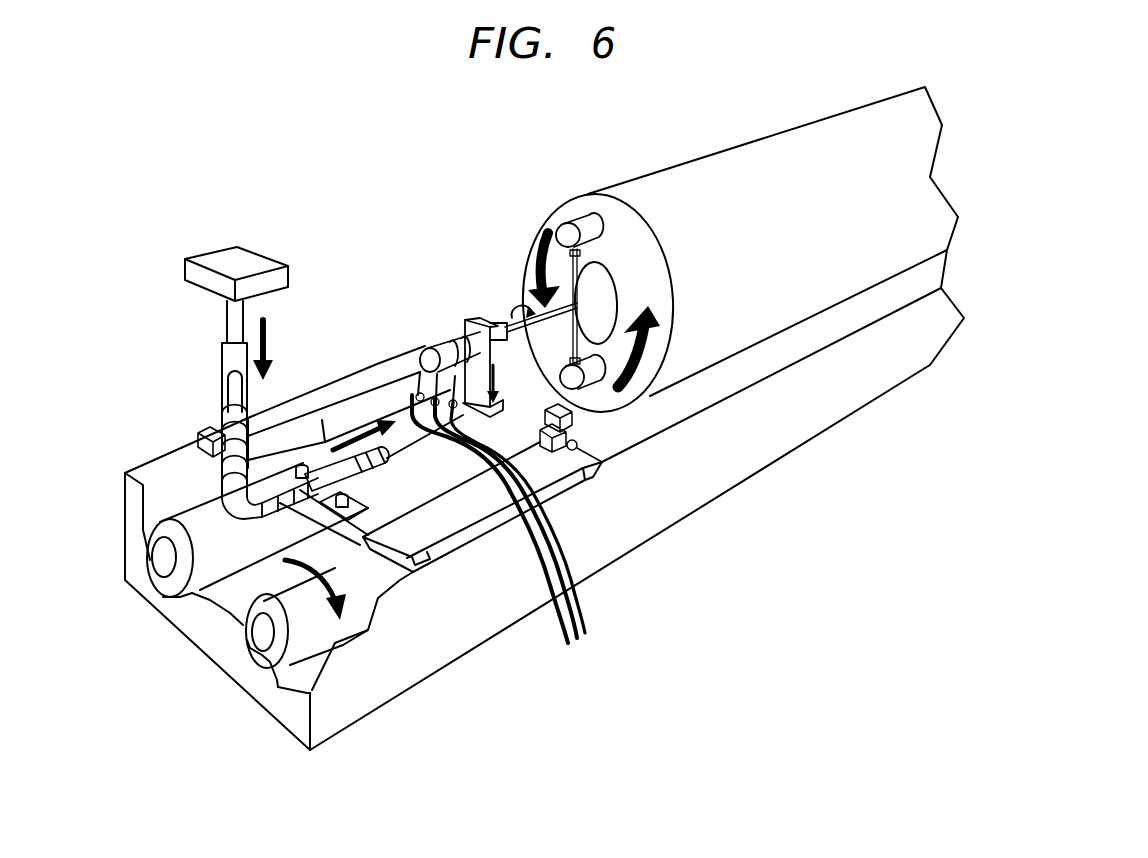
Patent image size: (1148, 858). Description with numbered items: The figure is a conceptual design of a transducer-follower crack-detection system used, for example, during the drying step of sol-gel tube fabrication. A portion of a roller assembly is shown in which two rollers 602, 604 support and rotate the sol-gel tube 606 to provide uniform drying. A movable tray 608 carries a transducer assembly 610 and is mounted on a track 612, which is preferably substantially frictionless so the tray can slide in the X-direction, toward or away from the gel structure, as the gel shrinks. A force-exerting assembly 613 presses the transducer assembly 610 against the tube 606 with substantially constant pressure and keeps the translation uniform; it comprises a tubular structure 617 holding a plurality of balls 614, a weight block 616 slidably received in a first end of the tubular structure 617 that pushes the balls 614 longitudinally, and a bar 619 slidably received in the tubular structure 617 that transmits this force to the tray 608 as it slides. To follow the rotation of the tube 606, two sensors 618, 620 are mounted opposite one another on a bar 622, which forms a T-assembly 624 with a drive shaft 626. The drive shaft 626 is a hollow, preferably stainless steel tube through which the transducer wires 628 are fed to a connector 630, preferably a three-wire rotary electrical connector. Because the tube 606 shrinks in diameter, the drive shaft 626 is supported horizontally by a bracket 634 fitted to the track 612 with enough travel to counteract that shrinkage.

The roller 602 is at (170, 597).
The roller 604 is at (274, 668).
The sol-gel tube 606 is at (647, 167).
The movable tray 608 is at (448, 462).
The transducer assembly 610 is at (433, 337).
The track 612 is at (333, 393).
The force-exerting assembly 613 is at (215, 359).
The balls 614 is at (228, 420).
The weight block 616 is at (248, 258).
The tubular structure 617 is at (223, 377).
The sensor 618 is at (565, 222).
The bar 619 is at (360, 478).
The sensor 620 is at (593, 395).
The bar 622 is at (543, 243).
The T-assembly 624 is at (505, 278).
The drive shaft 626 is at (543, 327).
The transducer wires 628 is at (588, 630).
The connector 630 is at (462, 325).
The bracket 634 is at (464, 320).